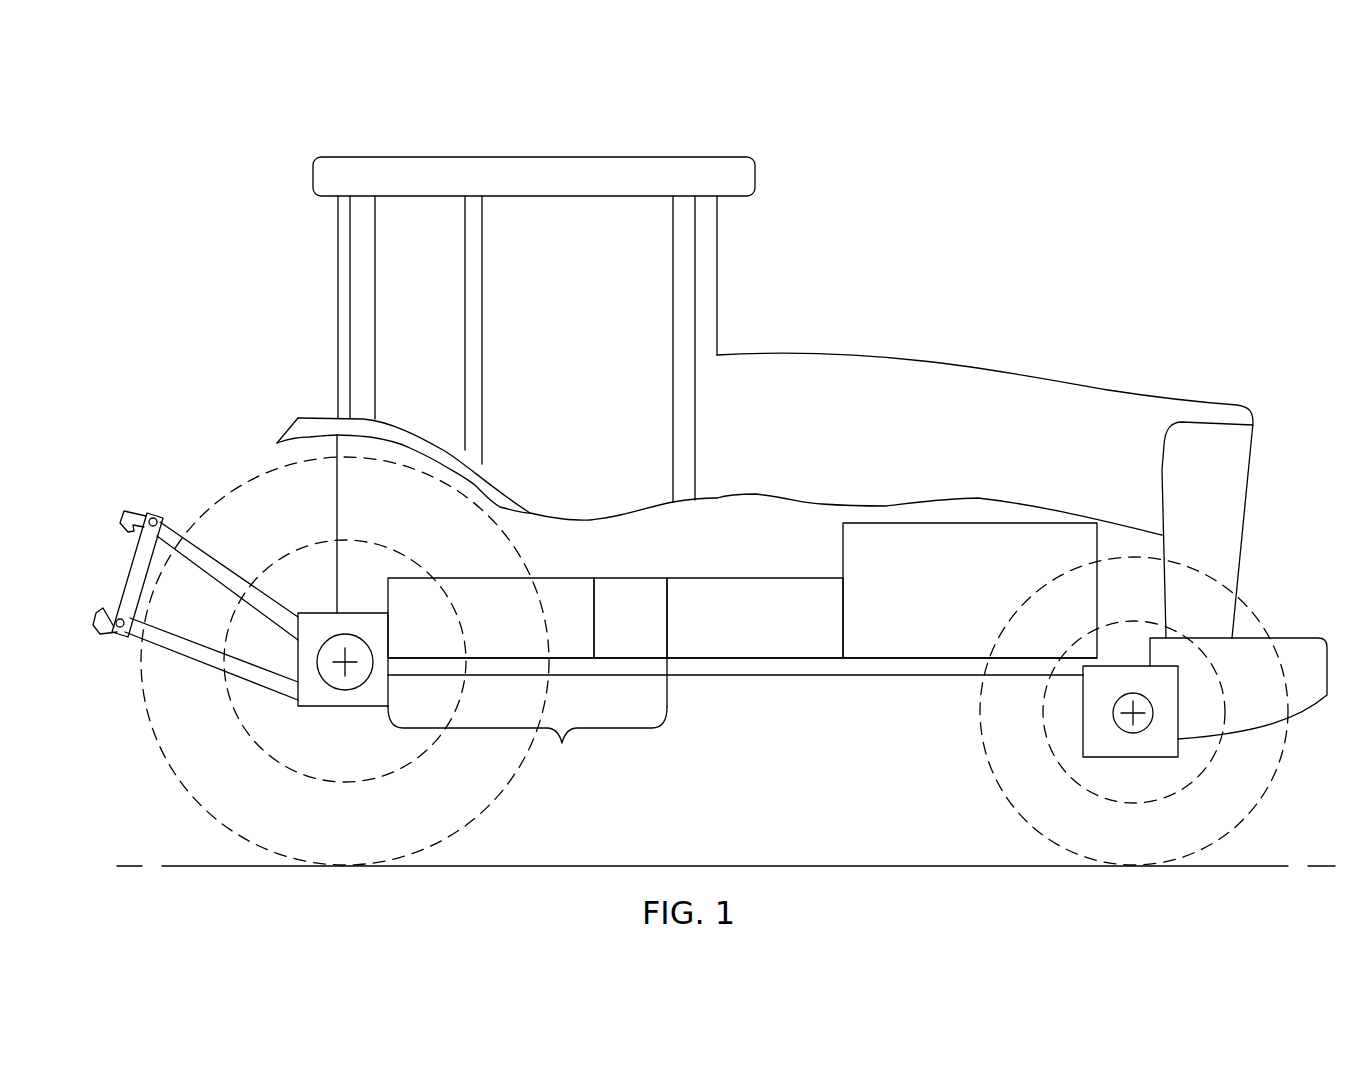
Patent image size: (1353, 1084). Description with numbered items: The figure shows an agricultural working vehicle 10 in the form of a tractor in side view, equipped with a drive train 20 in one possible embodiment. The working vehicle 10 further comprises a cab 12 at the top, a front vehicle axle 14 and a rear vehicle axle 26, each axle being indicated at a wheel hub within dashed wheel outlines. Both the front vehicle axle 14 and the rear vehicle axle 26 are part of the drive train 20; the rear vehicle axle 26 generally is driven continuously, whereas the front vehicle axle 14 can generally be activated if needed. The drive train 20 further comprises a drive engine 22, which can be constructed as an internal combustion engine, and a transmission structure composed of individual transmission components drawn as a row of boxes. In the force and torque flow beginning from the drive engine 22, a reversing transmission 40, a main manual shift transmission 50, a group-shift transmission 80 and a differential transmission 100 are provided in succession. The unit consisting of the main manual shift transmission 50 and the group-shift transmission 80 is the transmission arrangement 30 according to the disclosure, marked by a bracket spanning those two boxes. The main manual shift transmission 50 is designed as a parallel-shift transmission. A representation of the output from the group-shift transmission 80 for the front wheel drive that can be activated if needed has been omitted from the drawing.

The working vehicle 10 is at (1026, 146).
The cab 12 is at (623, 183).
The front vehicle axle 14 is at (1140, 715).
The drive train 20 is at (750, 447).
The drive engine 22 is at (983, 602).
The rear vehicle axle 26 is at (338, 657).
The transmission arrangement 30 is at (527, 740).
The reversing transmission 40 is at (767, 628).
The main manual shift transmission 50 is at (643, 632).
The group-shift transmission 80 is at (505, 632).
The differential transmission 100 is at (357, 620).